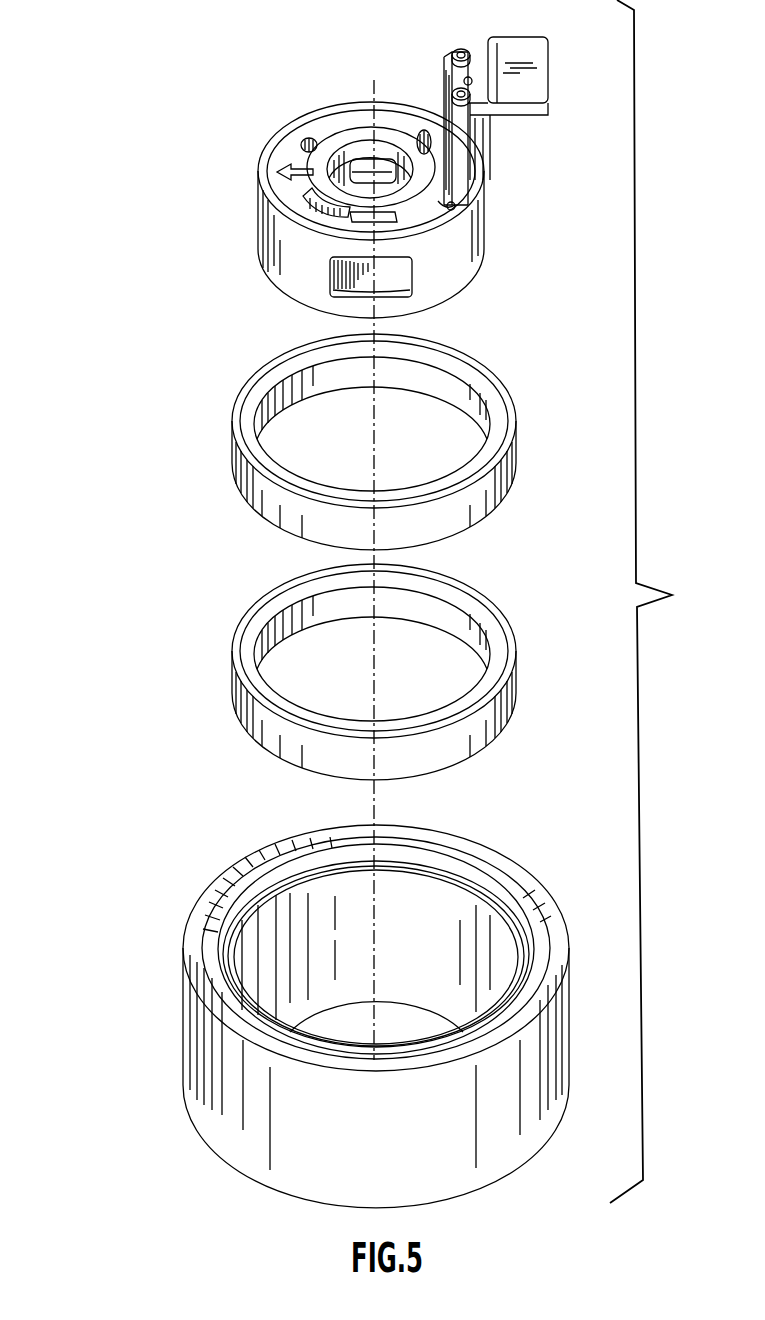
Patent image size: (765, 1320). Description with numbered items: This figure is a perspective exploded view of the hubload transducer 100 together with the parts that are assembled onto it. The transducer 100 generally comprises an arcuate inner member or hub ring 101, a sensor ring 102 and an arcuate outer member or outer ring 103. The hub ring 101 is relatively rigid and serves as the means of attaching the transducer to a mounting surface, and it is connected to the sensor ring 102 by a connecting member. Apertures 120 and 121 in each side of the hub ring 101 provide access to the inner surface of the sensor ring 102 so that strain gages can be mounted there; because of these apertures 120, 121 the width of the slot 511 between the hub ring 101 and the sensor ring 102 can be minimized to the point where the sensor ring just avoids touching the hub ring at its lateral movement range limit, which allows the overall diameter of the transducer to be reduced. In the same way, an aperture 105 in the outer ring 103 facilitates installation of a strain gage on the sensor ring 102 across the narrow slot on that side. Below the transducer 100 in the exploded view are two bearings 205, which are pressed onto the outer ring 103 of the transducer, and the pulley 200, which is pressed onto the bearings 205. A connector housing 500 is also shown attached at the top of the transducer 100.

The transducer 100 is at (244, 106).
The hub ring 101 is at (393, 198).
The sensor ring 102 is at (337, 120).
The outer ring 103 is at (283, 243).
The aperture 105 is at (352, 268).
The aperture 120 is at (350, 162).
The aperture 121 is at (379, 222).
The slot 511 is at (407, 128).
The connector bracket 500 is at (517, 93).
The bearings 205 is at (232, 424).
The pulley 200 is at (200, 1024).